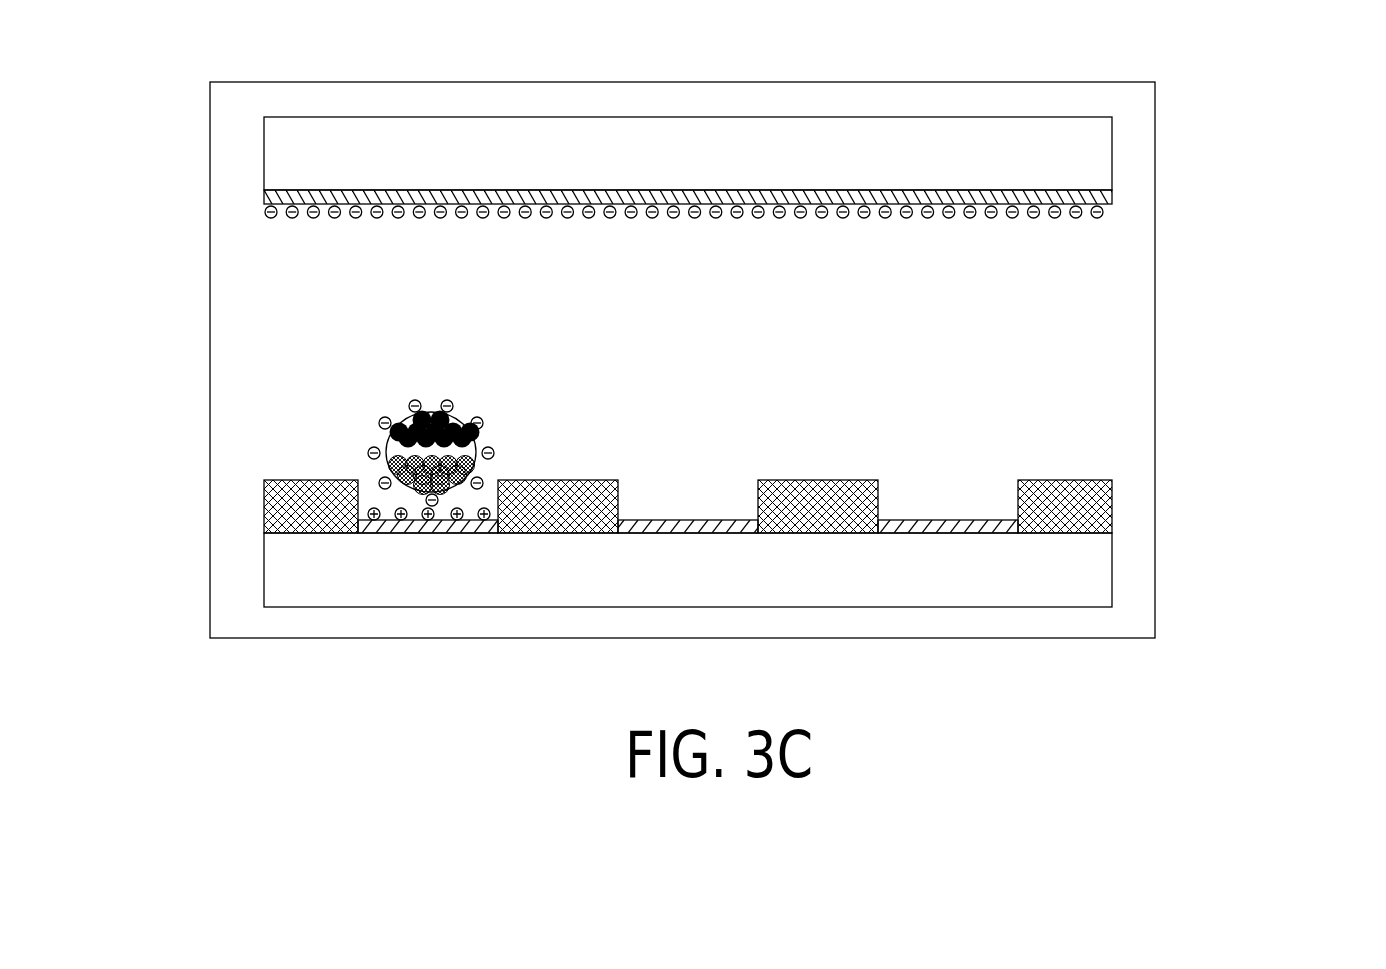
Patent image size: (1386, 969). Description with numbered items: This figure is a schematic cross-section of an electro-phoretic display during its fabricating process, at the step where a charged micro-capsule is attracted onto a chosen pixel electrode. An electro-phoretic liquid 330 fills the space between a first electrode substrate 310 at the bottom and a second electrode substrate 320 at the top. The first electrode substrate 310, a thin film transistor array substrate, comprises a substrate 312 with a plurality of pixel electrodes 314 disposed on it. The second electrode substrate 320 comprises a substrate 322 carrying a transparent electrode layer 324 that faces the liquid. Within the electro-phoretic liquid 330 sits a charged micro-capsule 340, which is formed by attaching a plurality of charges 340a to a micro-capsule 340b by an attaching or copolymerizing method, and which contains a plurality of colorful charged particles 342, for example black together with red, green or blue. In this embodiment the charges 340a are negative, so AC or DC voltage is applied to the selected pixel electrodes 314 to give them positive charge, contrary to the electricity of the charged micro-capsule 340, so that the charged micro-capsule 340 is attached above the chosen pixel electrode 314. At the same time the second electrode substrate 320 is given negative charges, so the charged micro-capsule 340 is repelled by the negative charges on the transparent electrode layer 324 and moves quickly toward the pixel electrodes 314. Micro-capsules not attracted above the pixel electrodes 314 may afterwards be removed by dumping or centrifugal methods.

The first electrode substrate 310 is at (1315, 502).
The substrate 312 is at (1093, 583).
The pixel electrodes 314 is at (1000, 527).
The second electrode substrate 320 is at (1230, 127).
The substrate 322 is at (1102, 155).
The transparent electrode layer 324 is at (1110, 195).
The electro-phoretic liquid 330 is at (1130, 402).
The charged micro-capsule 340 is at (115, 305).
The charges 340a is at (410, 404).
The micro-capsule 340b is at (387, 443).
The colorful charged particles 342 is at (387, 462).